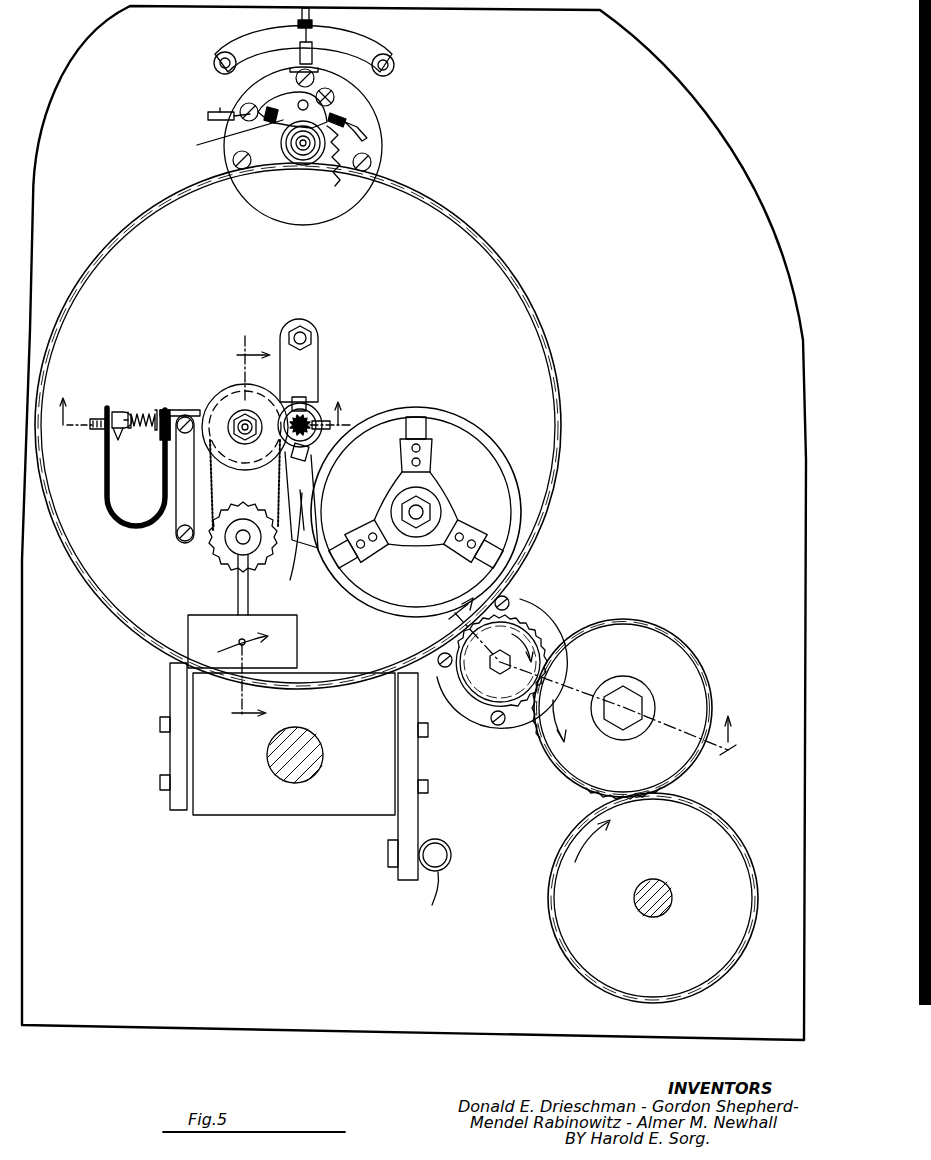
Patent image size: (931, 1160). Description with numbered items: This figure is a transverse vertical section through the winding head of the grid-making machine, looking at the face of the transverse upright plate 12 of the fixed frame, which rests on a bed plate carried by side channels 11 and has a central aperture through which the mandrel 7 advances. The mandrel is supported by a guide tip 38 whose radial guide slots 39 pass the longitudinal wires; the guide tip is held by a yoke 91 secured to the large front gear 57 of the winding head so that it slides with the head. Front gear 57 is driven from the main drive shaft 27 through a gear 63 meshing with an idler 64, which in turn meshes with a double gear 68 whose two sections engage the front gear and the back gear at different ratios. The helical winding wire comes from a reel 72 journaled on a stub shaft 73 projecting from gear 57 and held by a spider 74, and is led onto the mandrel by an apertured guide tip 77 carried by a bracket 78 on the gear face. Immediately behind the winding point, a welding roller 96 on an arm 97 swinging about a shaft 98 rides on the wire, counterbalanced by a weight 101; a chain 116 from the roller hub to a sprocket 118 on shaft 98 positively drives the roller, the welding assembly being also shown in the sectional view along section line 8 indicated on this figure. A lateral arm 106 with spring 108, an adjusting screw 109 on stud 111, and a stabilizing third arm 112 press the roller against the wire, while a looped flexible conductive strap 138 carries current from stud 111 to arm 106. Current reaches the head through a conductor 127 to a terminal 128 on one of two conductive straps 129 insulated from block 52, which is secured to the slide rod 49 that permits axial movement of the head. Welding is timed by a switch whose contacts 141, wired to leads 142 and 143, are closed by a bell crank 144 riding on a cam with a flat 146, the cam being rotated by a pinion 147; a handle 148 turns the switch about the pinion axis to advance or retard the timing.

The transverse upright plate 12 is at (652, 82).
The handle 148 is at (312, 14).
The pinion 147 is at (307, 160).
The bell crank 144 is at (287, 122).
The flat 146 is at (339, 168).
The lead 142 is at (213, 111).
The contacts 141 is at (207, 145).
The lead 143 is at (366, 136).
The front gear 57 is at (529, 336).
The yoke 91 is at (318, 350).
The guide tip 38 is at (318, 400).
The radial guide slots 39 is at (320, 418).
The mandrel 7 is at (332, 418).
The apertured guide tip 77 is at (307, 455).
The bracket 78 is at (301, 526).
The welding electrode or roller 96 is at (223, 384).
The section line 8- 8 is at (251, 537).
The arm 97 is at (246, 488).
The sprocket 118 is at (230, 560).
The shaft 98 is at (237, 544).
The lateral arm 106 is at (190, 408).
The third arm 112 is at (180, 477).
The chain 116 is at (207, 490).
The flexible conductive strap 138 is at (115, 524).
The stud 111 is at (116, 410).
The spring 108 is at (138, 408).
The adjusting screw 109 is at (95, 430).
The supply roll or reel 72 is at (490, 486).
The spider 74 is at (432, 476).
The stub shaft 73 is at (415, 524).
The weight 101 is at (297, 650).
The block 52 is at (340, 805).
The conductive straps 129 is at (172, 748).
The slide rod 49 is at (285, 778).
The conductor 127 is at (437, 855).
The terminal 128 is at (433, 899).
The double gear 68 is at (487, 692).
The idler 64 is at (676, 660).
The side channels 11 is at (590, 684).
The gear 63 is at (572, 875).
The main drive shaft 27 is at (641, 906).